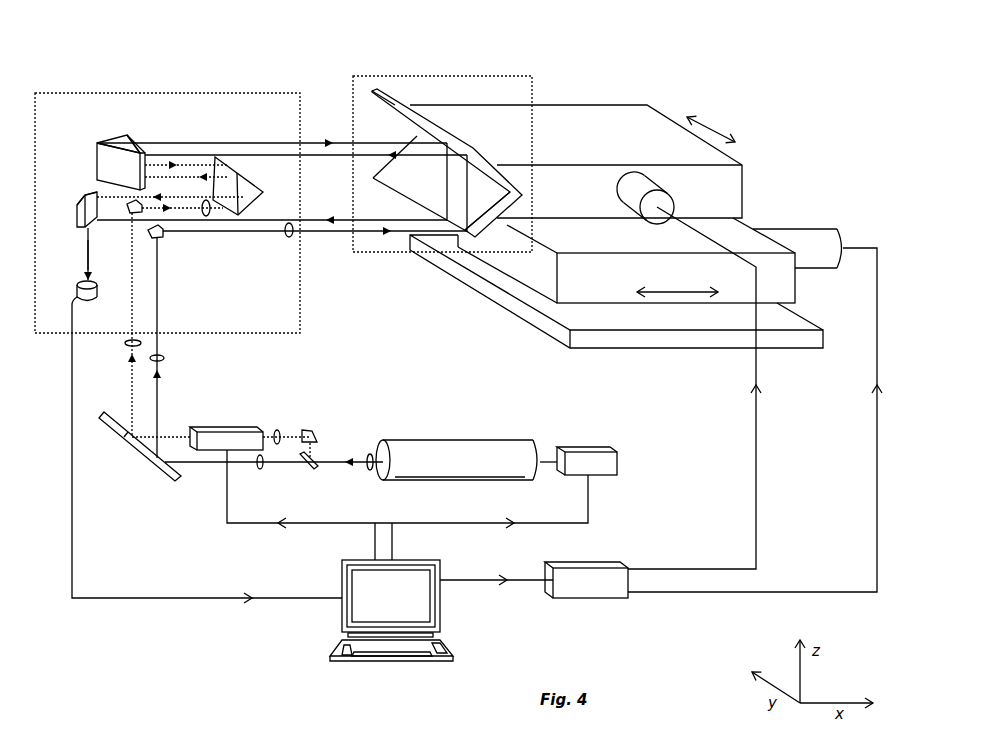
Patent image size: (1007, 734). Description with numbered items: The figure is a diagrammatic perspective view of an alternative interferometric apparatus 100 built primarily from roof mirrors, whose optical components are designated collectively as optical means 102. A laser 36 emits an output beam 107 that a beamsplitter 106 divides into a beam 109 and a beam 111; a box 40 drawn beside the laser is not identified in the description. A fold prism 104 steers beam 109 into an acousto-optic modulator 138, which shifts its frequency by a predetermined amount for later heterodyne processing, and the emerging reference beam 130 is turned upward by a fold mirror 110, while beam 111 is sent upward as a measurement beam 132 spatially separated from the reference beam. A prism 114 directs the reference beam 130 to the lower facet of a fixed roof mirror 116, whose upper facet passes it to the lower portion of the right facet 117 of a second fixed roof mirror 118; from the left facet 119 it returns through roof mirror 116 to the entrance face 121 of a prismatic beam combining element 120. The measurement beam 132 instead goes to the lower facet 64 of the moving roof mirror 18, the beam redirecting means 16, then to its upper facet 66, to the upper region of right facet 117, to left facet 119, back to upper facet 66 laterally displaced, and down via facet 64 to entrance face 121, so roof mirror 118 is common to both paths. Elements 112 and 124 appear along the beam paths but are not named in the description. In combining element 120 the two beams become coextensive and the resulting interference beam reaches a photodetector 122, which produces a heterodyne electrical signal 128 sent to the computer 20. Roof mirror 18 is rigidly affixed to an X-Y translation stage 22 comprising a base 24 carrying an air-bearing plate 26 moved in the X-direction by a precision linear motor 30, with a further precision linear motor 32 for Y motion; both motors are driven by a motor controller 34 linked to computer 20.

The interferometric apparatus 100 is at (279, 50).
The optical means 102 is at (134, 82).
The beam redirecting means 16 is at (394, 58).
The roof mirror 18 is at (437, 127).
The computer 20 is at (343, 612).
The X-Y translation stage 22 is at (590, 98).
The base 24 is at (603, 340).
The plate 26 is at (573, 288).
The precision linear motor 30 is at (818, 230).
The precision linear motor 32 is at (651, 178).
The motor controller 34 is at (597, 557).
The laser 36 is at (440, 438).
The laser power supply 40 is at (585, 447).
The lower facet 64 is at (478, 209).
The upper facet 66 is at (394, 110).
The fold prism 104 is at (313, 428).
The beamsplitter 106 is at (310, 467).
The output beam 107 is at (370, 470).
The beam 109 is at (277, 430).
The fold mirror 110 is at (118, 433).
The beam 111 is at (260, 469).
The prism 112 is at (163, 238).
The prism 114 is at (130, 212).
The roof mirror 116 is at (250, 175).
The right facet 117 is at (120, 165).
The roof mirror 118 is at (106, 130).
The left facet 119 is at (122, 142).
The prismatic beam combining element 120 is at (75, 220).
The entrance face 121 is at (102, 190).
The photodetector 122 is at (118, 307).
The lens 124 is at (205, 214).
The heterodyne electrical signal 128 is at (72, 360).
The reference beam 130 is at (128, 345).
The measurement beam 132 is at (160, 358).
The acousto-optic modulator 138 is at (233, 426).